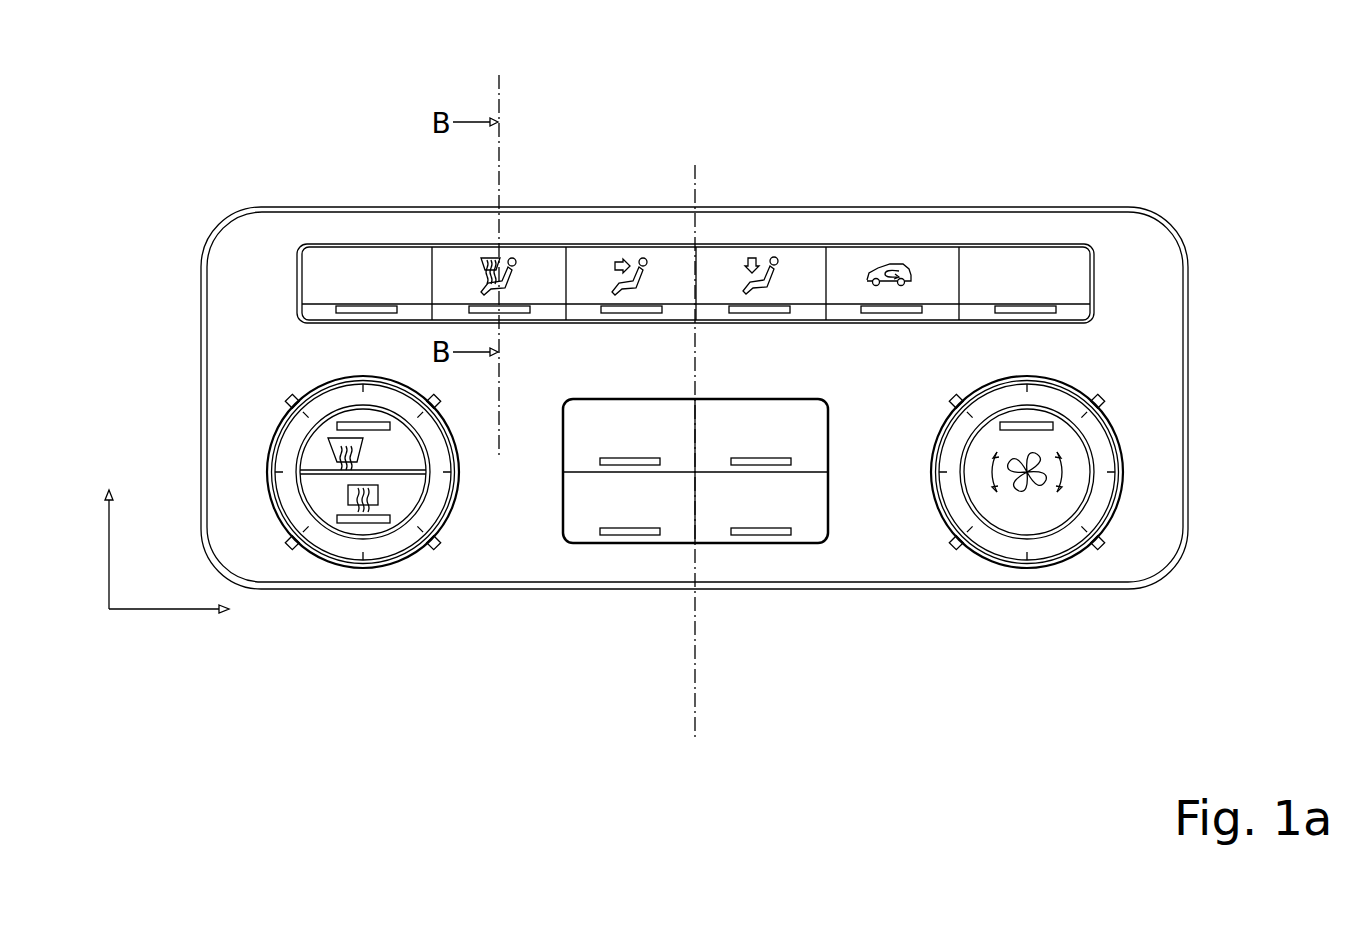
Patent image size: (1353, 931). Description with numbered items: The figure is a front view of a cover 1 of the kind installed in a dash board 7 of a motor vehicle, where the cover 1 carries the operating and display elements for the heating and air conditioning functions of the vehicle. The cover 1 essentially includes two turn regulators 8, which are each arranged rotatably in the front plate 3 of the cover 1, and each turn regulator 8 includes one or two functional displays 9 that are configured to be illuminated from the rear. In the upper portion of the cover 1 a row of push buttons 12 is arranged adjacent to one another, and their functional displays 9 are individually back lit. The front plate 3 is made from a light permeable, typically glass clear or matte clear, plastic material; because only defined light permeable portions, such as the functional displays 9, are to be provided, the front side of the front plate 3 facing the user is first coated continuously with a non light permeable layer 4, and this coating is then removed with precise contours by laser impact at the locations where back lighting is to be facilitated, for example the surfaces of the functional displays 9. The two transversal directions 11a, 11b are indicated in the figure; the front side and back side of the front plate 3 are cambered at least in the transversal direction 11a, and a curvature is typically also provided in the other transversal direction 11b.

The cover 1 is at (639, 615).
The front plate 3 is at (695, 310).
The non light permeable layer 4 is at (696, 283).
The dash board 7 is at (725, 398).
The turn regulator 8 is at (453, 504).
The functional display 9 is at (352, 422).
The transversal direction 11a is at (78, 549).
The other transversal direction 11b is at (169, 629).
The push button 12 is at (861, 260).